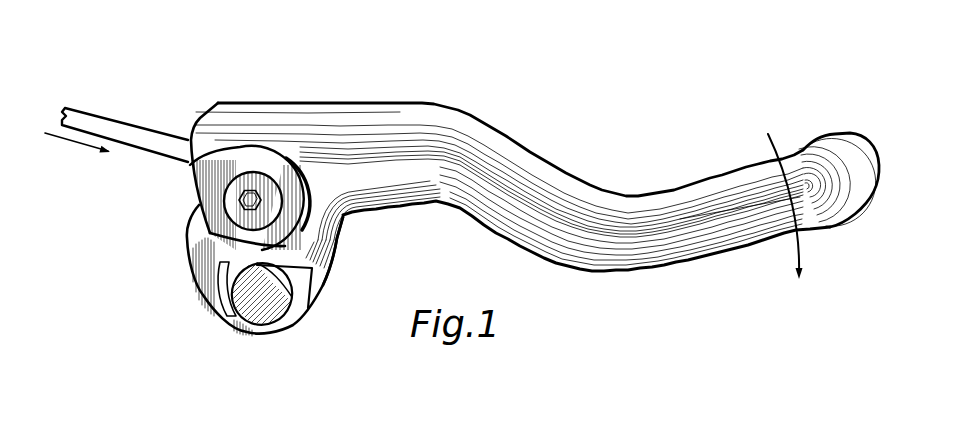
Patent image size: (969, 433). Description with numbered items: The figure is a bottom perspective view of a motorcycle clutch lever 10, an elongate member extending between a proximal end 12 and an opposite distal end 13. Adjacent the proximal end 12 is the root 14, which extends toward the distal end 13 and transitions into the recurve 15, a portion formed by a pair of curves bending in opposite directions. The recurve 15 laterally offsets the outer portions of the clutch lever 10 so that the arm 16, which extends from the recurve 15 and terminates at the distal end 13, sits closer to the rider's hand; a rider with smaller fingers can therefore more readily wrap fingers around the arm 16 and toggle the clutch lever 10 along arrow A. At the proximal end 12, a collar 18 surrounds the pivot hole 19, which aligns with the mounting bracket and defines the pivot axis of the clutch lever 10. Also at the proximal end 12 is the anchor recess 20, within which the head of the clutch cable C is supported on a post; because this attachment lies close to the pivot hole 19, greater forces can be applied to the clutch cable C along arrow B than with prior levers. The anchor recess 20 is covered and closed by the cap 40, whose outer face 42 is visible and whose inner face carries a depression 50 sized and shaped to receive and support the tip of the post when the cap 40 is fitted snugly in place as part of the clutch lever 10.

The clutch lever 10 is at (466, 76).
The proximal end 12 is at (325, 292).
The distal end 13 is at (848, 155).
The root 14 is at (278, 118).
The recurve 15 is at (550, 180).
The arm 16 is at (733, 192).
The collar 18 is at (242, 322).
The pivot hole 19 is at (277, 285).
The anchor recess 20 is at (185, 188).
The cap 40 is at (300, 227).
The outer face 42 is at (226, 160).
The depression 50 is at (222, 202).
The arrow A is at (800, 247).
The arrow B is at (77, 147).
The clutch cable C is at (93, 120).